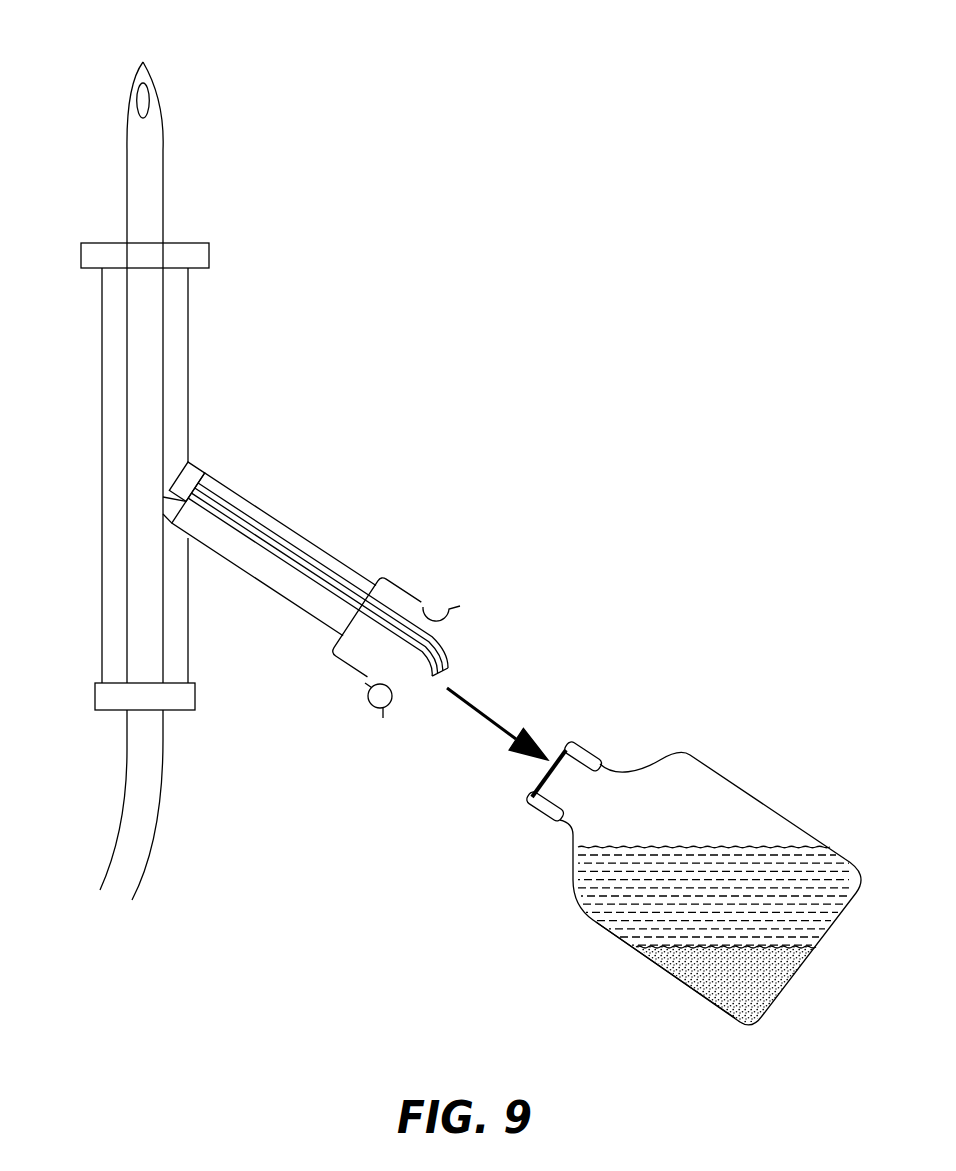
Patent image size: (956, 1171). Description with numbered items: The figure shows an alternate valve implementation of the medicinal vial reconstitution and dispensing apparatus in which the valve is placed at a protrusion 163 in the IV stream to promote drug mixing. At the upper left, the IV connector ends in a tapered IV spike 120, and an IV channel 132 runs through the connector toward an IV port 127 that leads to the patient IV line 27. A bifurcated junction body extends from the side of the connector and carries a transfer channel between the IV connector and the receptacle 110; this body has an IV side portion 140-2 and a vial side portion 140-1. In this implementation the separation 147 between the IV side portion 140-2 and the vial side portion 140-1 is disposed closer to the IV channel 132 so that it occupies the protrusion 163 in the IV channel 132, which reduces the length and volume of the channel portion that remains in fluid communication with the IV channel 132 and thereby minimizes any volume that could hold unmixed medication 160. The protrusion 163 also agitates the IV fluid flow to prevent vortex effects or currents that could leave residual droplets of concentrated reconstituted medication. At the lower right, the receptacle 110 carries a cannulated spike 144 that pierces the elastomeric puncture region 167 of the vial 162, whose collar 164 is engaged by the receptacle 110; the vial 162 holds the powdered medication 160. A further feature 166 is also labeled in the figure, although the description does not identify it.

The IV spike 120 is at (145, 62).
The IV channel 132 is at (175, 372).
The IV port 127 is at (102, 712).
The patient IV line 27 is at (150, 852).
The IV side portion 140-2 is at (170, 473).
The protrusion 163 is at (137, 497).
The vial side portion 140-1 is at (280, 607).
The separation 147 is at (205, 490).
The receptacle 110 is at (333, 757).
The spike 144 is at (445, 665).
The puncture region 167 is at (556, 762).
The collar 164 is at (538, 815).
The powdered medication 160 is at (733, 945).
The liquid level 166 is at (709, 847).
The vial 162 is at (600, 920).